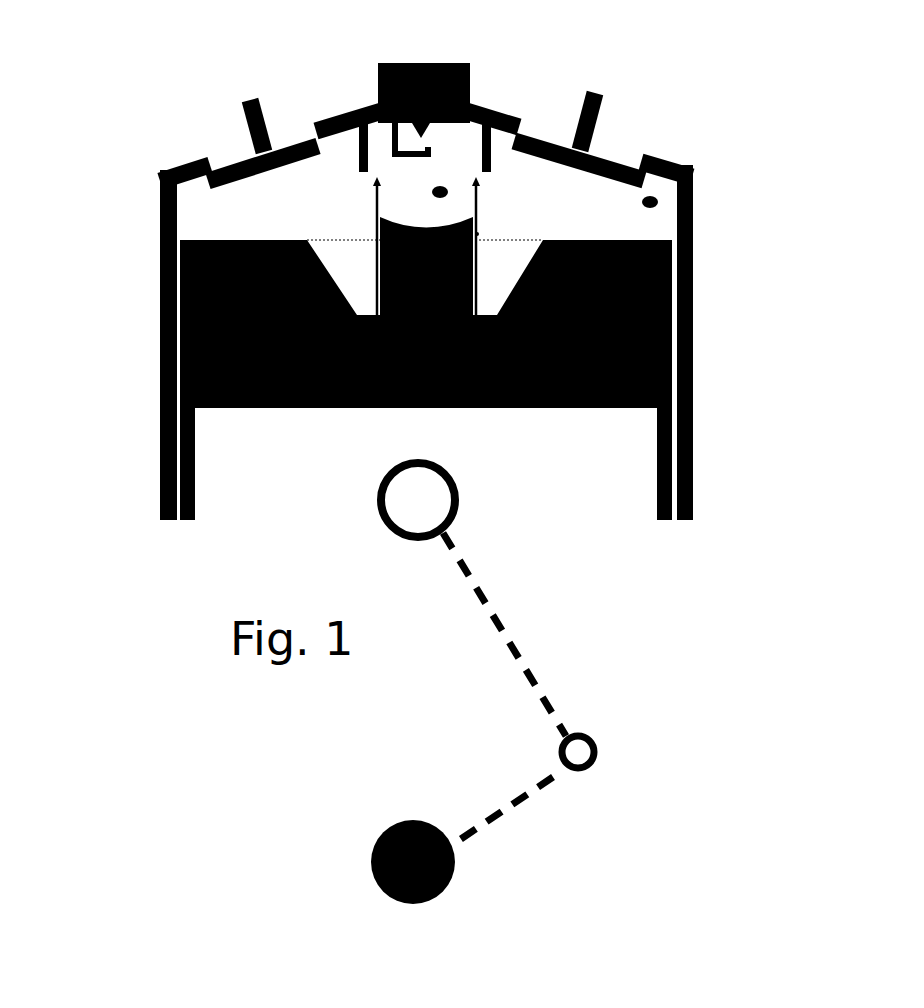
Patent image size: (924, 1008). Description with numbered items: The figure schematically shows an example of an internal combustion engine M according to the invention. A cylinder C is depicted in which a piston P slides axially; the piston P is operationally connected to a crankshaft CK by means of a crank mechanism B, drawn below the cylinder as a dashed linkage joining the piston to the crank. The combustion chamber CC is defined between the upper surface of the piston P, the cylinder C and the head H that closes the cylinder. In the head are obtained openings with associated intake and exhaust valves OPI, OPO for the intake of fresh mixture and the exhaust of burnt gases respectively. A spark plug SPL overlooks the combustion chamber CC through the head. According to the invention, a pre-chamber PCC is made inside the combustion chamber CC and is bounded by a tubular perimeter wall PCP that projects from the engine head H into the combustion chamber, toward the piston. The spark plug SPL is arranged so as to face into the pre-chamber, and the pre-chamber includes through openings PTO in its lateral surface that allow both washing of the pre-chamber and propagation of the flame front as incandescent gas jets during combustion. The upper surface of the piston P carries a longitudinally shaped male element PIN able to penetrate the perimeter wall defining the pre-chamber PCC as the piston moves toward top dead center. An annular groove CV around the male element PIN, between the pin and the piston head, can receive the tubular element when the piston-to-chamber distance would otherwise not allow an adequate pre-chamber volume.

The cylinder C is at (693, 378).
The head H is at (664, 157).
The piston P is at (298, 409).
The groove CV is at (493, 278).
The male element PIN is at (362, 256).
The spark plug SPL is at (417, 63).
The intake valve OPI is at (229, 164).
The exhaust valve OPO is at (603, 153).
The through openings PTO is at (346, 185).
The pre-chamber PCC is at (445, 194).
The perimeter wall PCP is at (478, 233).
The combustion chamber CC is at (655, 203).
The internal combustion engine M is at (890, 173).
The crank mechanism B is at (568, 621).
The crankshaft CK is at (453, 877).